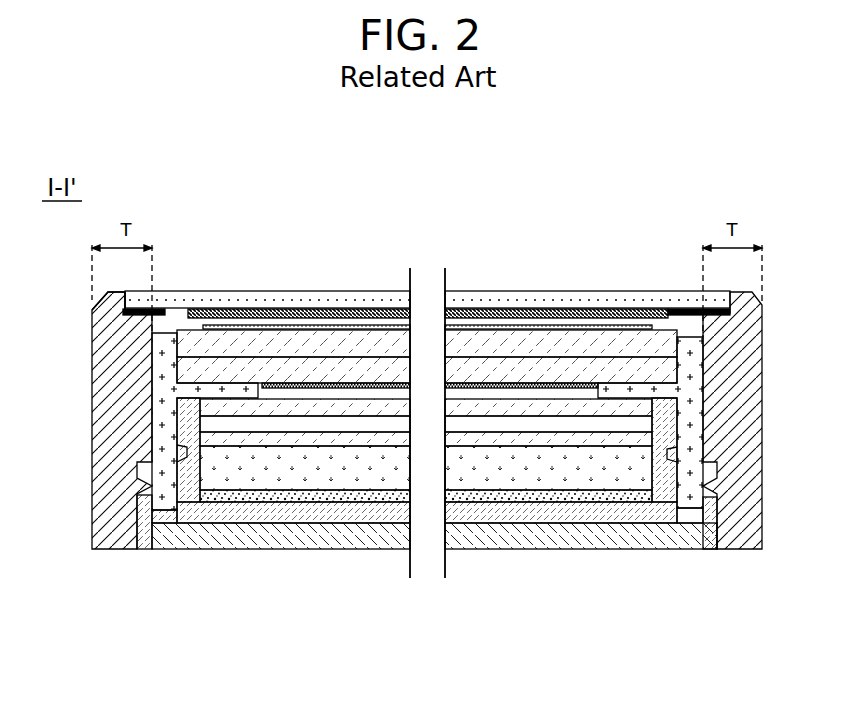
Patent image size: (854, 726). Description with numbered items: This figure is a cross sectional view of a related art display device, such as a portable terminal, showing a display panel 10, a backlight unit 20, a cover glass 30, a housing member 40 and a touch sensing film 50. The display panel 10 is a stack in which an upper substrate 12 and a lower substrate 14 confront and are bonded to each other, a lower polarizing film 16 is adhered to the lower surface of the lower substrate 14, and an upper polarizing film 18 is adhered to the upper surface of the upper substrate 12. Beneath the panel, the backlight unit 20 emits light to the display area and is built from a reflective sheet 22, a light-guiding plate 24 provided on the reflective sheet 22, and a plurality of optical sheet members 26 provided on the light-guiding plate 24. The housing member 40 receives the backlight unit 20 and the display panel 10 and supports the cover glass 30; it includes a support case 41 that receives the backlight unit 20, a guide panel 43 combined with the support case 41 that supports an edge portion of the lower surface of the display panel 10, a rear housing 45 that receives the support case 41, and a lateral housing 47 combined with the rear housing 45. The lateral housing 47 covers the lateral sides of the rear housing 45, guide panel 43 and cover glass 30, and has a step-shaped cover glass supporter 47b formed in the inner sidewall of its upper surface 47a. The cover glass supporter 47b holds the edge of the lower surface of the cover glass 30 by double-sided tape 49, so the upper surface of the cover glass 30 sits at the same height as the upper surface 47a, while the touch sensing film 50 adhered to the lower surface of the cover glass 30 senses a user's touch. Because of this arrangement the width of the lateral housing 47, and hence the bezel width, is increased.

The display panel 10 is at (427, 290).
The upper substrate 12 is at (332, 370).
The lower substrate 14 is at (288, 338).
The lower polarizing film 16 is at (370, 383).
The upper polarizing film 18 is at (244, 326).
The backlight unit 20 is at (426, 527).
The reflective sheet 22 is at (592, 498).
The light-guiding plate 24 is at (547, 461).
The optical sheet members 26 is at (512, 437).
The cover glass 30 is at (490, 303).
The housing member 40 is at (392, 446).
The support case 41 is at (434, 565).
The guide panel 43 is at (163, 490).
The rear housing 45 is at (207, 538).
The lateral housing 47 is at (392, 446).
The upper surface of the lateral housing 47a is at (112, 293).
The cover glass supporter 47b is at (135, 330).
The double-sided tape 49 is at (163, 313).
The touch sensing film 50 is at (550, 314).